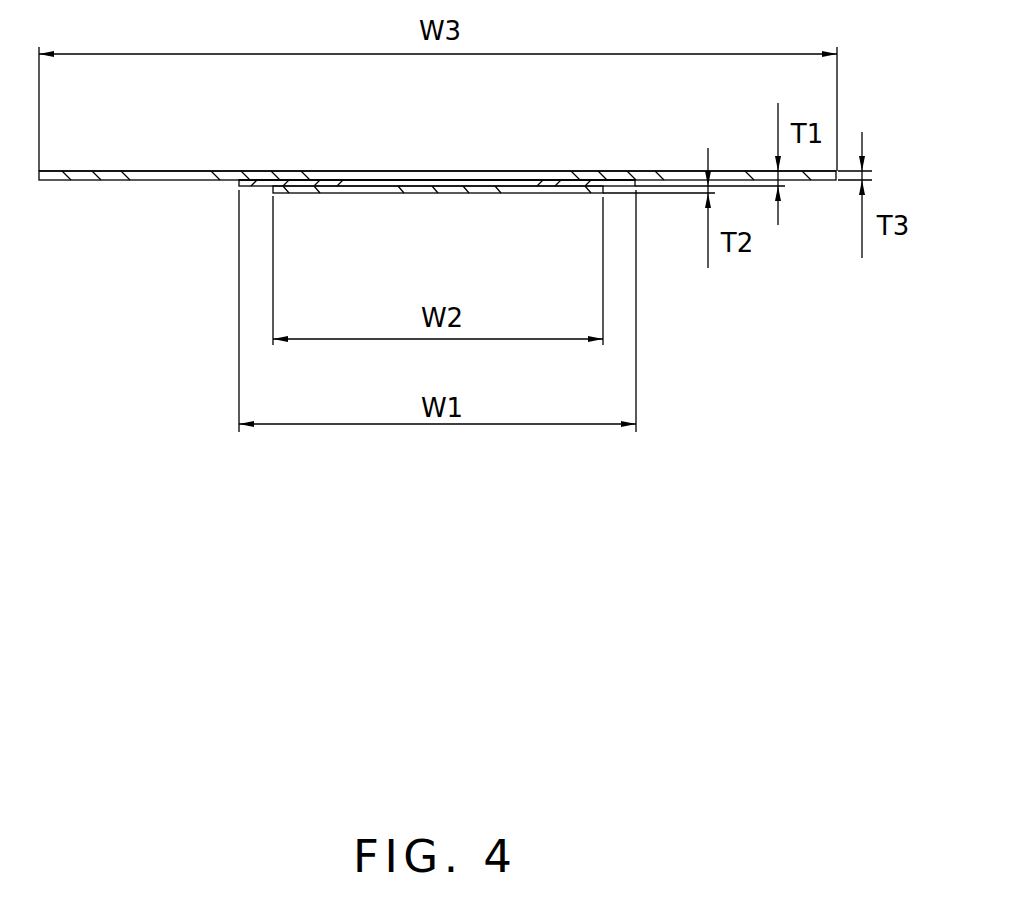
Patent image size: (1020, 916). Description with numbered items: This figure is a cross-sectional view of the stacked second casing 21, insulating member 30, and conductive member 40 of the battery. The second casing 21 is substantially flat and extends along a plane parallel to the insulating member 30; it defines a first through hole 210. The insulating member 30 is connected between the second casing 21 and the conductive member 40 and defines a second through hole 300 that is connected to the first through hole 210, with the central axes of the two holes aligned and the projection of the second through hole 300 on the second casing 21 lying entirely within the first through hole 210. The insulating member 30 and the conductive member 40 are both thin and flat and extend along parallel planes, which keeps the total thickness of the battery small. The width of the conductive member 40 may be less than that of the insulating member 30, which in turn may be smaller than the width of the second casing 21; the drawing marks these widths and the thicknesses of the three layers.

The second casing 21 is at (146, 177).
The first through hole 210 is at (434, 171).
The insulating member 30 is at (255, 184).
The second through hole 300 is at (505, 181).
The conductive member 40 is at (407, 189).